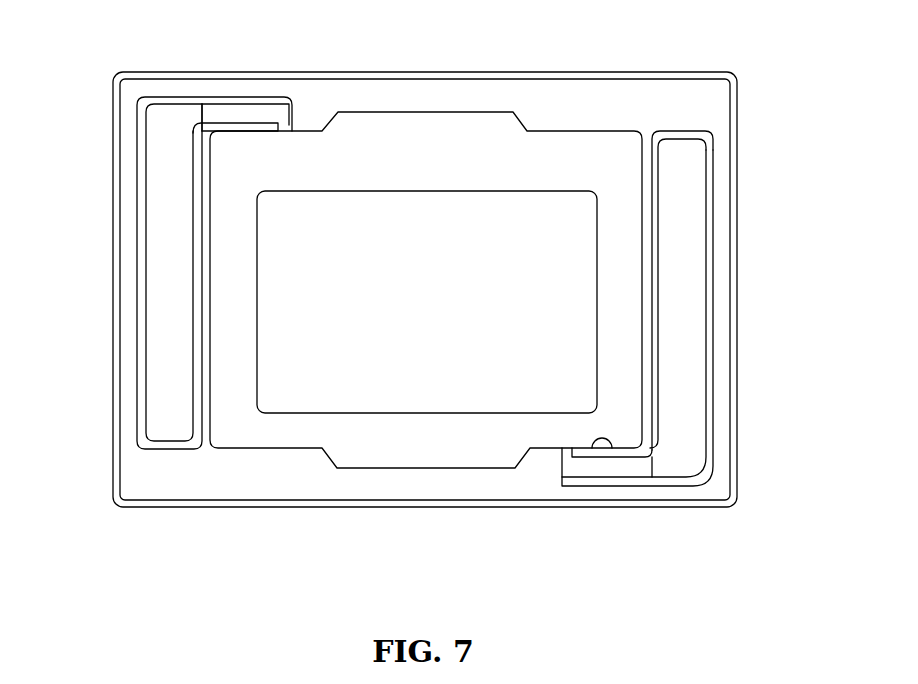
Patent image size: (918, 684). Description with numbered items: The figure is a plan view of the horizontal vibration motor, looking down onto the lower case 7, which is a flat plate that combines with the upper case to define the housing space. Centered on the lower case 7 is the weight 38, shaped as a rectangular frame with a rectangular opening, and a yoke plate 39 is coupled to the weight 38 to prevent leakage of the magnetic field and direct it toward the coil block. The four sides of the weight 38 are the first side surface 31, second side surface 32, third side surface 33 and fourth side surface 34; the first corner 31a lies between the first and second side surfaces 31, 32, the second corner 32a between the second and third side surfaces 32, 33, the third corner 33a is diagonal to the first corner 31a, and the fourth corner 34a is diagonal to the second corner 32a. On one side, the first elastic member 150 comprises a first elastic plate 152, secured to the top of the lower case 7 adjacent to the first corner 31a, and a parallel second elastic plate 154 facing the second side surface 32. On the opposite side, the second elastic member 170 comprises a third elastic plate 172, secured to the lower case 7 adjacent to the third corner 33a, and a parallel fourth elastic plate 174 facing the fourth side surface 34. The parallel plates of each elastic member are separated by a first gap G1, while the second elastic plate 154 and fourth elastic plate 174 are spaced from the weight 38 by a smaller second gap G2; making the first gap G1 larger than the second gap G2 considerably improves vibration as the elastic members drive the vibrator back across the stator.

The lower case 7 is at (446, 493).
The first side surface 31 is at (304, 130).
The first corner 31a is at (242, 131).
The second side surface 32 is at (208, 194).
The second corner 32a is at (213, 450).
The third side surface 33 is at (273, 450).
The third corner 33a is at (592, 448).
The fourth side surface 34 is at (645, 174).
The fourth corner 34a is at (645, 142).
The weight 38 is at (408, 160).
The yoke plate 39 is at (543, 203).
The first elastic member 150 is at (137, 306).
The first elastic plate 152 is at (140, 386).
The second elastic plate 154 is at (195, 358).
The second elastic member 170 is at (722, 328).
The third elastic plate 172 is at (712, 378).
The fourth elastic plate 174 is at (655, 403).
The first gap G1 is at (253, 260).
The second gap G2 is at (270, 219).